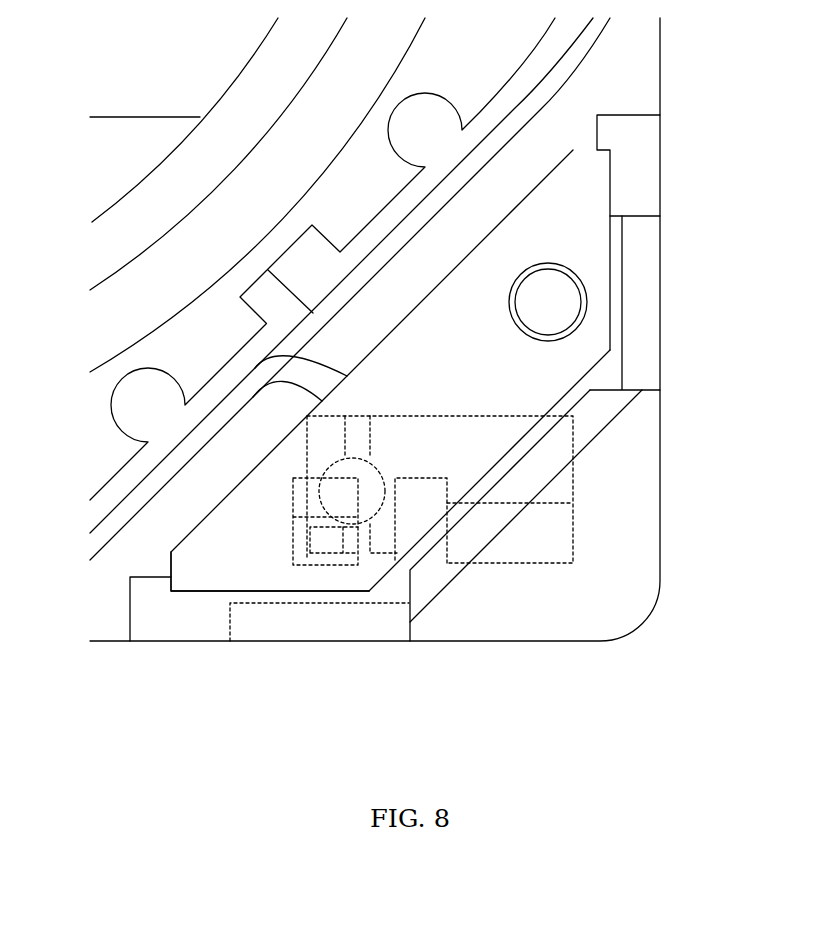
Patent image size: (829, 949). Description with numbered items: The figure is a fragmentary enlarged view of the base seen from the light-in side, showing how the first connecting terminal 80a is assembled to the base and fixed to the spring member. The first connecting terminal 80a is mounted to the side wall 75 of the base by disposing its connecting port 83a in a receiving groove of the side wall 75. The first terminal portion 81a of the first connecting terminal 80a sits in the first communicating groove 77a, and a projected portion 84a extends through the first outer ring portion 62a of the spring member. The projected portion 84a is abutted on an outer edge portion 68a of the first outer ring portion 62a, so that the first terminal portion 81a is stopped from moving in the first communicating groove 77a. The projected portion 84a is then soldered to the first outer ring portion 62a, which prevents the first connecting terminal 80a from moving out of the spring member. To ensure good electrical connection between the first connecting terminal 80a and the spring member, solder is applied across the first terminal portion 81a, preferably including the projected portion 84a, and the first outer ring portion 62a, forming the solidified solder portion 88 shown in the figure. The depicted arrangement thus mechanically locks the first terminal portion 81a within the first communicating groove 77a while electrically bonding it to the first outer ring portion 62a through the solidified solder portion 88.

The first outer ring portion 62a is at (478, 352).
The solidified solder portion 88 is at (356, 488).
The connecting port 83a is at (578, 458).
The first terminal portion 81a is at (301, 517).
The side wall 75 is at (120, 641).
The projected portion 84a is at (321, 539).
The first communicating groove 77a is at (307, 597).
The outer edge portion 68a is at (335, 582).
The first connecting terminal 80a is at (414, 548).